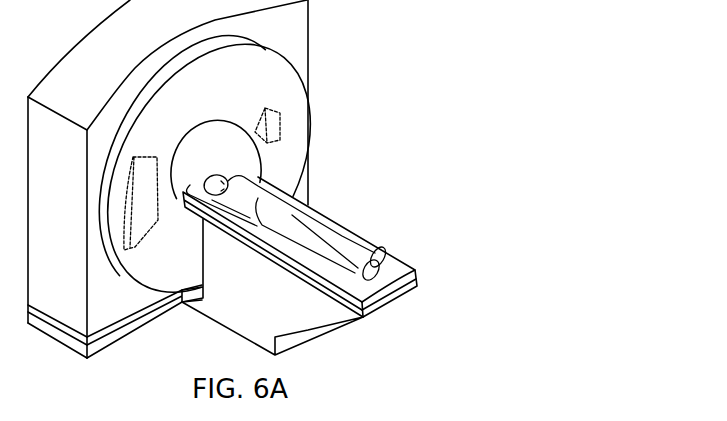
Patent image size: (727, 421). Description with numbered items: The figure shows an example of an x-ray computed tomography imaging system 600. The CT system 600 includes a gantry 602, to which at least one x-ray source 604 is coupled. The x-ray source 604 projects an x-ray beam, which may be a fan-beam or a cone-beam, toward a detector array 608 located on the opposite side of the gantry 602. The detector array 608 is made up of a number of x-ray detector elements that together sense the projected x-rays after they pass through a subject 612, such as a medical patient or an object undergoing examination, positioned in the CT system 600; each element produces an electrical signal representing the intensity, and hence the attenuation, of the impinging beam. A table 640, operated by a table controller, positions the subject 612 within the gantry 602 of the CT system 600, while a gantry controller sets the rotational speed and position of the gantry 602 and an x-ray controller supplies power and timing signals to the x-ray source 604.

The CT imaging system 600 is at (373, 35).
The gantry 602 is at (307, 97).
The x-ray source 604 is at (268, 105).
The detector array 608 is at (155, 155).
The subject 612 is at (259, 181).
The table 640 is at (410, 267).